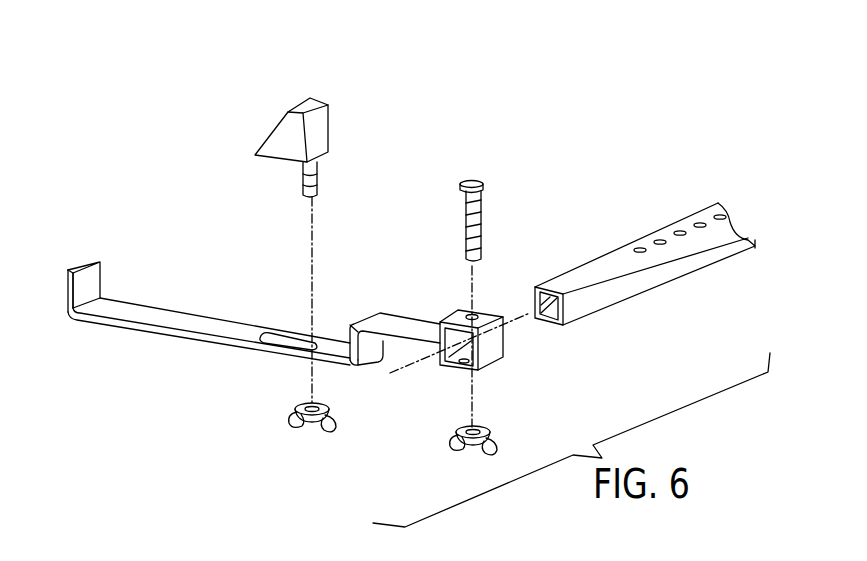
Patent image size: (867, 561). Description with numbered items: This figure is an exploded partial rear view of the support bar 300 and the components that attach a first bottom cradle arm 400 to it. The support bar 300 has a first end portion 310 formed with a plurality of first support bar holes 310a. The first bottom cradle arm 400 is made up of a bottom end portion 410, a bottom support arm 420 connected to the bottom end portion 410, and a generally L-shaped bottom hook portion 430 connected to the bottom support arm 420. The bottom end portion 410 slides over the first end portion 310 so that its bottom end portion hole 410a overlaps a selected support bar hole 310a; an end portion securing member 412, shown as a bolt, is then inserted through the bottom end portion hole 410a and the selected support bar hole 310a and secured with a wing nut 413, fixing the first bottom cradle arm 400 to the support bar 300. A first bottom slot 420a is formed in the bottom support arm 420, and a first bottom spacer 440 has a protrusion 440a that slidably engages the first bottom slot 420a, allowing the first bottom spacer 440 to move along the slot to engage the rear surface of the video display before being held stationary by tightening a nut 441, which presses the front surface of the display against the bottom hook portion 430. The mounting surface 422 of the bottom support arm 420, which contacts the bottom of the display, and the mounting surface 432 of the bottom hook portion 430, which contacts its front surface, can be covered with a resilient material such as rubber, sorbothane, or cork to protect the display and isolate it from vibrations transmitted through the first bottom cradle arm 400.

The support bar 300 is at (645, 265).
The first end portion 310 is at (640, 301).
The first support bar holes 310a is at (638, 250).
The first bottom cradle arm 400 is at (298, 307).
The bottom end portion 410 is at (470, 335).
The bottom end portion hole 410a is at (470, 313).
The end portion securing member 412 is at (483, 232).
The wing nut 413 is at (475, 450).
The bottom support arm 420 is at (248, 296).
The first bottom slot 420a is at (281, 342).
The mounting surface 422 is at (143, 316).
The bottom hook portion 430 is at (83, 263).
The mounting surface 432 is at (87, 288).
The first bottom spacer 440 is at (315, 163).
The protrusion 440a is at (318, 177).
The nut 441 is at (313, 427).